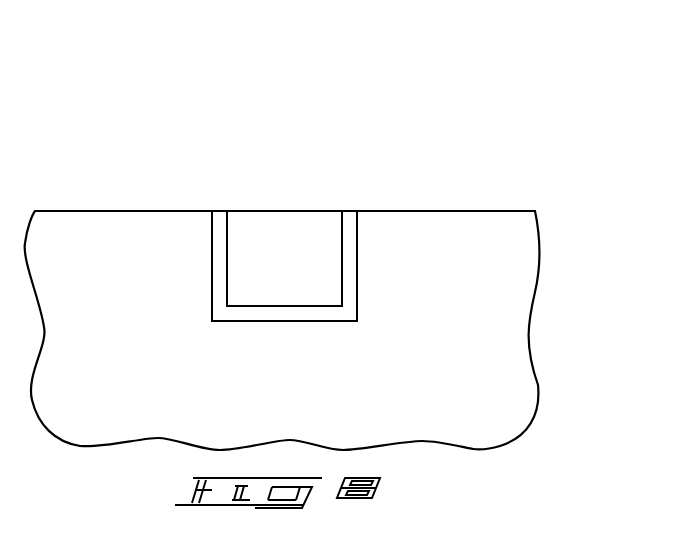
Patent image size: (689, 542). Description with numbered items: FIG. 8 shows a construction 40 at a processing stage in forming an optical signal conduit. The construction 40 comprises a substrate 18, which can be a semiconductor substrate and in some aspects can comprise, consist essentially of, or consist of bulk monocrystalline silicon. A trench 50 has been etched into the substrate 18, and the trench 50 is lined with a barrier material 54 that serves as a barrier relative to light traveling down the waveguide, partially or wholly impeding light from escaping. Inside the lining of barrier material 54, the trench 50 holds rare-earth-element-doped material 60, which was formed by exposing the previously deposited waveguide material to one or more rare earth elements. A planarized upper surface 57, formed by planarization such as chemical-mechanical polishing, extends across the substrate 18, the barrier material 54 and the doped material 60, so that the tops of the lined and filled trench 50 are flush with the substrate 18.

The substrate 18 is at (458, 403).
The construction 40 is at (484, 88).
The trench 50 is at (284, 188).
The barrier material 54 is at (221, 218).
The planarized upper surface 57 is at (438, 209).
The rare-earth-element-doped material 60 is at (270, 272).